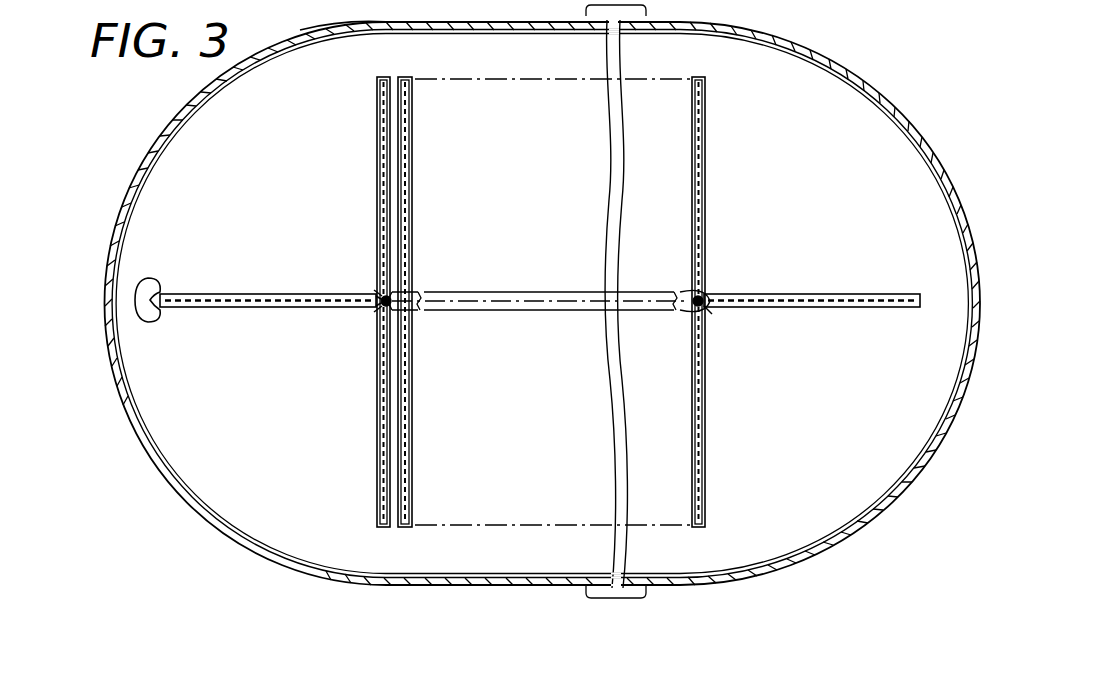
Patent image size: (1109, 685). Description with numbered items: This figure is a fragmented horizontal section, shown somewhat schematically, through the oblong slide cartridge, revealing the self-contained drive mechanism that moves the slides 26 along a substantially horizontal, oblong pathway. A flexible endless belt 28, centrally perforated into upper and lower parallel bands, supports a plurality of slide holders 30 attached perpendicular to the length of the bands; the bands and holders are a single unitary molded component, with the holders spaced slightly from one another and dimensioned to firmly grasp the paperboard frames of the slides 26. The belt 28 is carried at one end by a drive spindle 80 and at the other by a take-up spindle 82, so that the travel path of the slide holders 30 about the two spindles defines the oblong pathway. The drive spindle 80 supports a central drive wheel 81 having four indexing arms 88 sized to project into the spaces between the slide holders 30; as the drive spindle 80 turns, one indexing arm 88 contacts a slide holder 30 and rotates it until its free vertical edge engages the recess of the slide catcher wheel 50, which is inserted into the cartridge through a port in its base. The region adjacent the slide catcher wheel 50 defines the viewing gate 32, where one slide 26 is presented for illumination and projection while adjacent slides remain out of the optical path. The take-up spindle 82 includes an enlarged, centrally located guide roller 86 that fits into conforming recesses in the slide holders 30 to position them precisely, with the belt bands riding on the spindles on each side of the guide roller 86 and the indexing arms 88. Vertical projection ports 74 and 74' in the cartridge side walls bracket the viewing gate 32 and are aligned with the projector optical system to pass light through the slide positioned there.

The slide 26 is at (708, 183).
The endless belt 28 is at (483, 290).
The slide holder 30 is at (704, 288).
The viewing gate 32 is at (243, 296).
The slide catcher wheel 50 is at (155, 322).
The projection port 74 is at (543, 301).
The projection port 74' is at (322, 23).
The drive spindle 80 is at (378, 297).
The drive wheel 81 is at (374, 290).
The take-up spindle 82 is at (712, 305).
The guide roller 86 is at (710, 316).
The indexing arm 88 is at (376, 312).